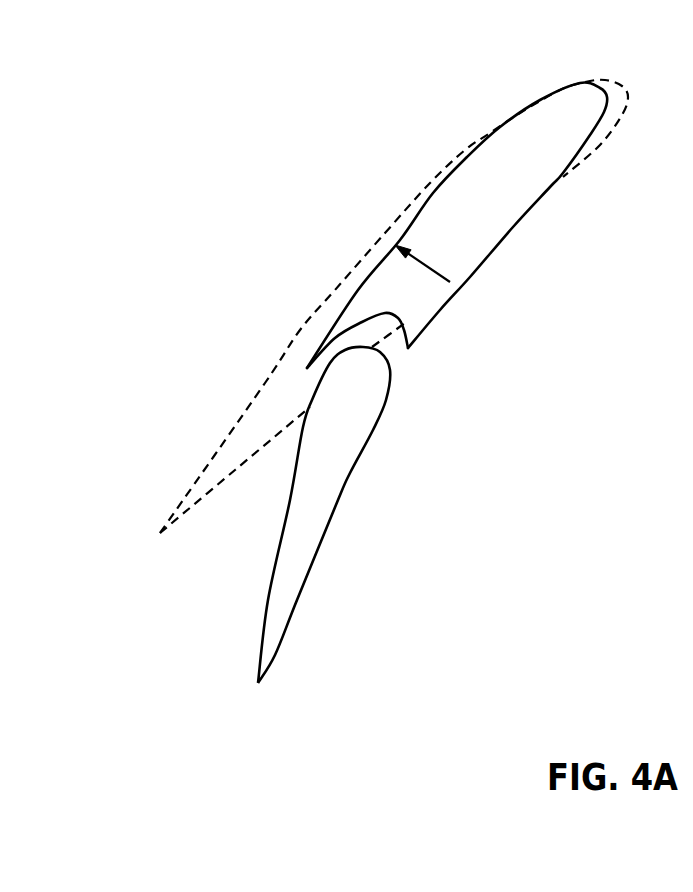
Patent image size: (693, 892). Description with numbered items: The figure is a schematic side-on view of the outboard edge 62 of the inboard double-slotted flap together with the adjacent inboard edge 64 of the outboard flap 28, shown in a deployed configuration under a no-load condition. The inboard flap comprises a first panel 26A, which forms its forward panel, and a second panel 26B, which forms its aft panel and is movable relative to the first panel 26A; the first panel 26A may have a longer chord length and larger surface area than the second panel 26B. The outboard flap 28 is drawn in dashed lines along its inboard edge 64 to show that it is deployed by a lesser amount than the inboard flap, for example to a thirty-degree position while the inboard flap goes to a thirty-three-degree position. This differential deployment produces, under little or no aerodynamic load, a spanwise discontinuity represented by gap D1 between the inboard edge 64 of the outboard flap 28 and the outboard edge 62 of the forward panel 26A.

The outboard edge 62 is at (465, 383).
The first panel 26A is at (513, 228).
The second panel 26B is at (323, 533).
The inboard edge 64 is at (382, 306).
The outboard flap 28 is at (265, 383).
The gap D1 is at (378, 228).